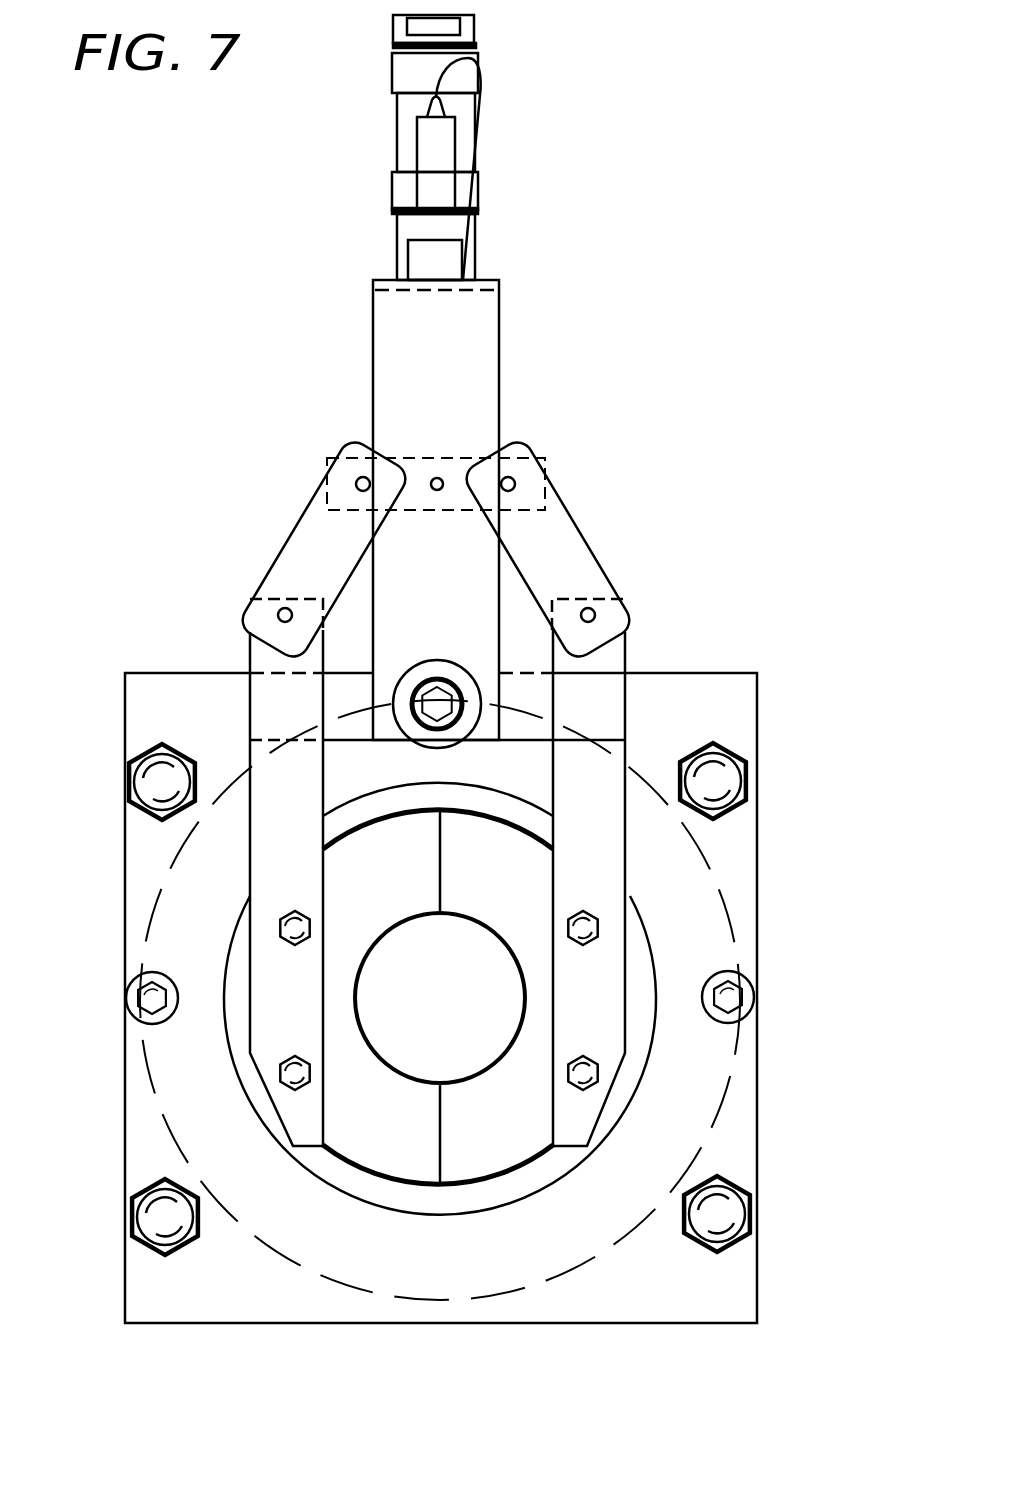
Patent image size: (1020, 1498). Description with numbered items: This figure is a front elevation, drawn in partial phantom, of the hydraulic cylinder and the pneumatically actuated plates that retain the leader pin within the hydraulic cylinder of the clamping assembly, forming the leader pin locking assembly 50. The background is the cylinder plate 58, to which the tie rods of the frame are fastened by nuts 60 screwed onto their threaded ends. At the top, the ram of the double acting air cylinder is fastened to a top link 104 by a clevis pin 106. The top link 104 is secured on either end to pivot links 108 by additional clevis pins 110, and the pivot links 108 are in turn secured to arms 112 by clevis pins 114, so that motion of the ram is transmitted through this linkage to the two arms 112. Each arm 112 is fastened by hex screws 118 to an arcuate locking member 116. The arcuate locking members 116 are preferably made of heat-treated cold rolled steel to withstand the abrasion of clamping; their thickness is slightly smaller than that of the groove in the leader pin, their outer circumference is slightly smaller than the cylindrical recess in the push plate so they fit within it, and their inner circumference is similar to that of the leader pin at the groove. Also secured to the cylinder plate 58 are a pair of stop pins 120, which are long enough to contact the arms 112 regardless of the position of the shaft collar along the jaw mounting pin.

The leader pin locking assembly 50 is at (350, 327).
The cylinder plate 58 is at (725, 705).
The nuts 60 is at (715, 778).
The top link 104 is at (528, 478).
The clevis pin 106 is at (437, 477).
The pivot links 108 is at (567, 565).
The clevis pins 110 is at (363, 478).
The arms 112 is at (612, 658).
The clevis pins 114 is at (285, 608).
The arcuate locking member 116 is at (462, 1177).
The hex screws 118 is at (280, 925).
The stop pins 120 is at (150, 996).